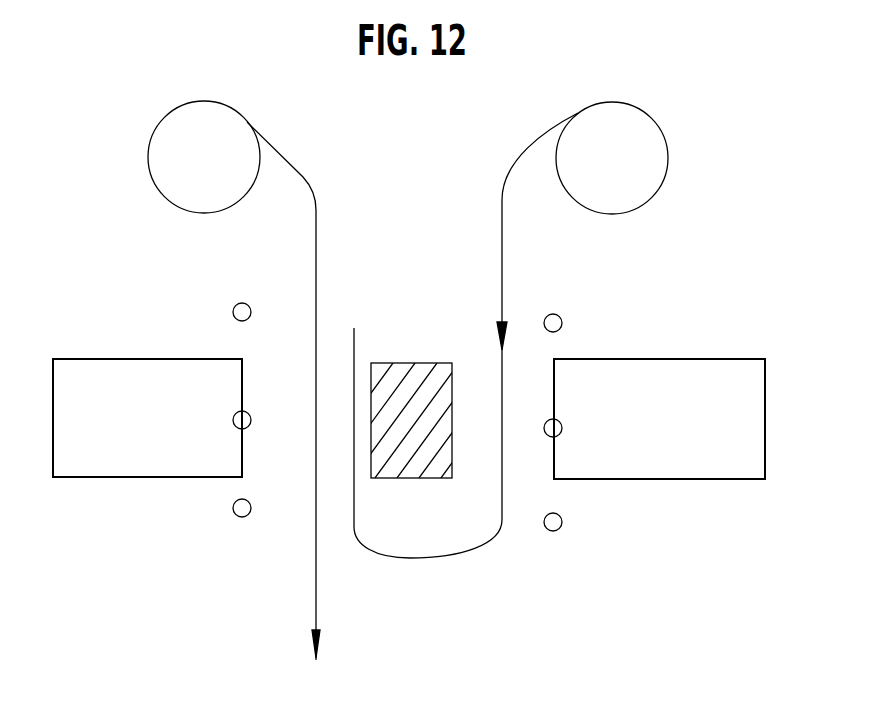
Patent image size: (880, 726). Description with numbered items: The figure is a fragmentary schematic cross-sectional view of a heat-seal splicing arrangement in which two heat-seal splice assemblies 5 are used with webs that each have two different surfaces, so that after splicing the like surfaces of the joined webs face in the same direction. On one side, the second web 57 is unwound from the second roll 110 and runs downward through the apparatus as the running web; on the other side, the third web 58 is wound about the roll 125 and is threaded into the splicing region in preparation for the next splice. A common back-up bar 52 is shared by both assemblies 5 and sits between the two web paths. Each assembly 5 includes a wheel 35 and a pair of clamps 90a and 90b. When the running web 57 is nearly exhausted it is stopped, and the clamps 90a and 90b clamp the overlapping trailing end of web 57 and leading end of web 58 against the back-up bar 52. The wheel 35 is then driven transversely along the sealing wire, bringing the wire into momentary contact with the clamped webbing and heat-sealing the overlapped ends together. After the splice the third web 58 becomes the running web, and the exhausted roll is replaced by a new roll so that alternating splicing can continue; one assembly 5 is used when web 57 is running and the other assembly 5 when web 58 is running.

The heat-seal splice assembly 5 is at (128, 523).
The wheel 35 is at (80, 460).
The back-up bar 52 is at (397, 367).
The second web 57 is at (283, 150).
The third web 58 is at (518, 162).
The clamp 90a is at (233, 310).
The clamp 90b is at (238, 518).
The second roll 110 is at (160, 154).
The roll 125 is at (652, 162).